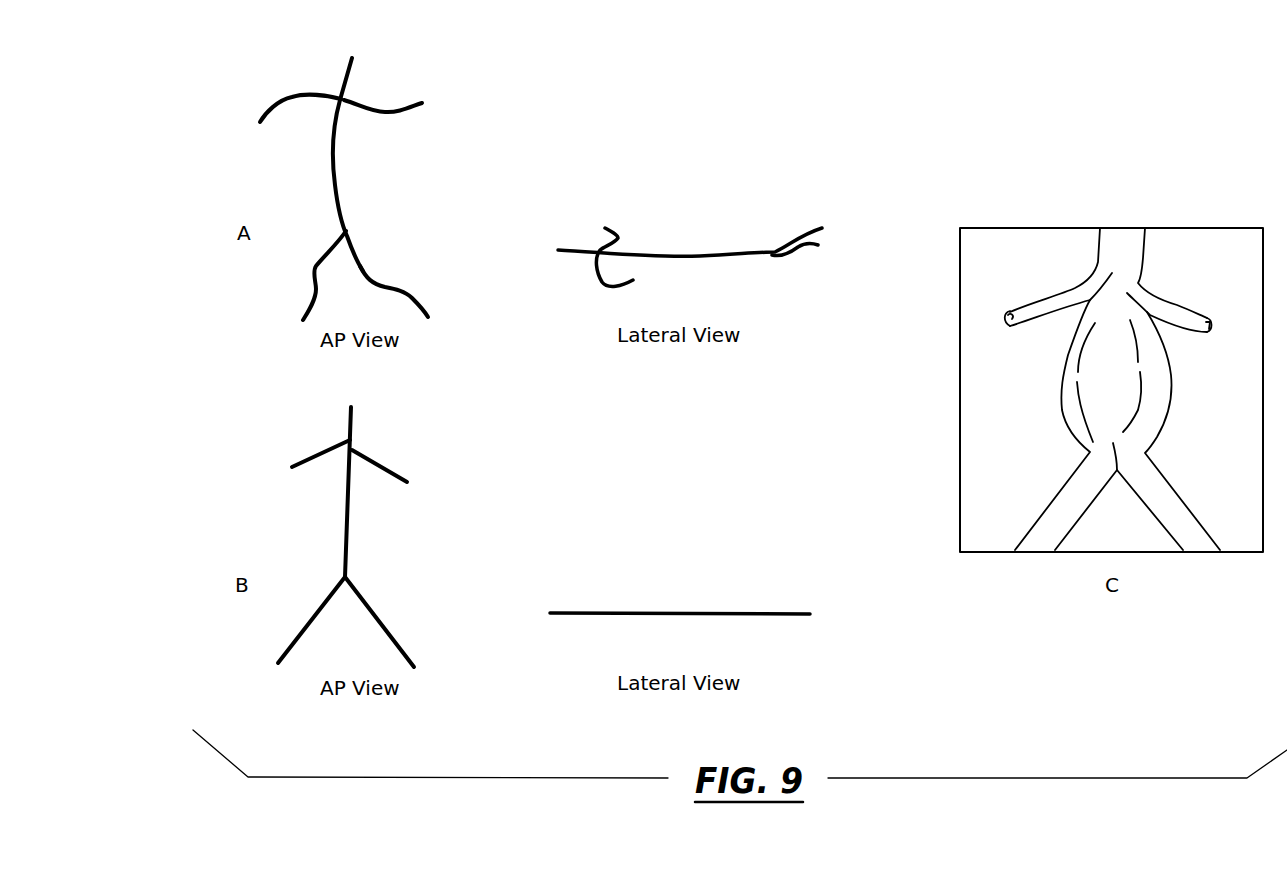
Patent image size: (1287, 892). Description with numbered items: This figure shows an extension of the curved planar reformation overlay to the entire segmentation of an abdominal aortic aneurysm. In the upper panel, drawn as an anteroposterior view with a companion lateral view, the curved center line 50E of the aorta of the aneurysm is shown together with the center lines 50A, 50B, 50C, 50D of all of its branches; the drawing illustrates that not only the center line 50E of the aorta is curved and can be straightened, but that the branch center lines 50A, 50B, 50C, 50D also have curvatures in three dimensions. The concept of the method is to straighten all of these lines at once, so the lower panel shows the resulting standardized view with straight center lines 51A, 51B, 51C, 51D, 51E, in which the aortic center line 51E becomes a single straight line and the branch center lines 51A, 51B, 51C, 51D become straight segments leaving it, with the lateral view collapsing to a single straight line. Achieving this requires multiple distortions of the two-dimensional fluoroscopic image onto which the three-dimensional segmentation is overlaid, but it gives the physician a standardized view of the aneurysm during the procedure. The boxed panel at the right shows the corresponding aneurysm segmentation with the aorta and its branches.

The center line of a branch 50A is at (298, 91).
The center line of a branch 50B is at (382, 110).
The center line of a branch 50C is at (308, 273).
The center line of a branch 50D is at (375, 277).
The curved center line of the aorta 50E is at (338, 156).
The straight center line 51A is at (322, 447).
The straight center line 51B is at (368, 452).
The straight center line 51C is at (315, 613).
The straight center line 51D is at (372, 605).
The straight center line 51E is at (350, 507).